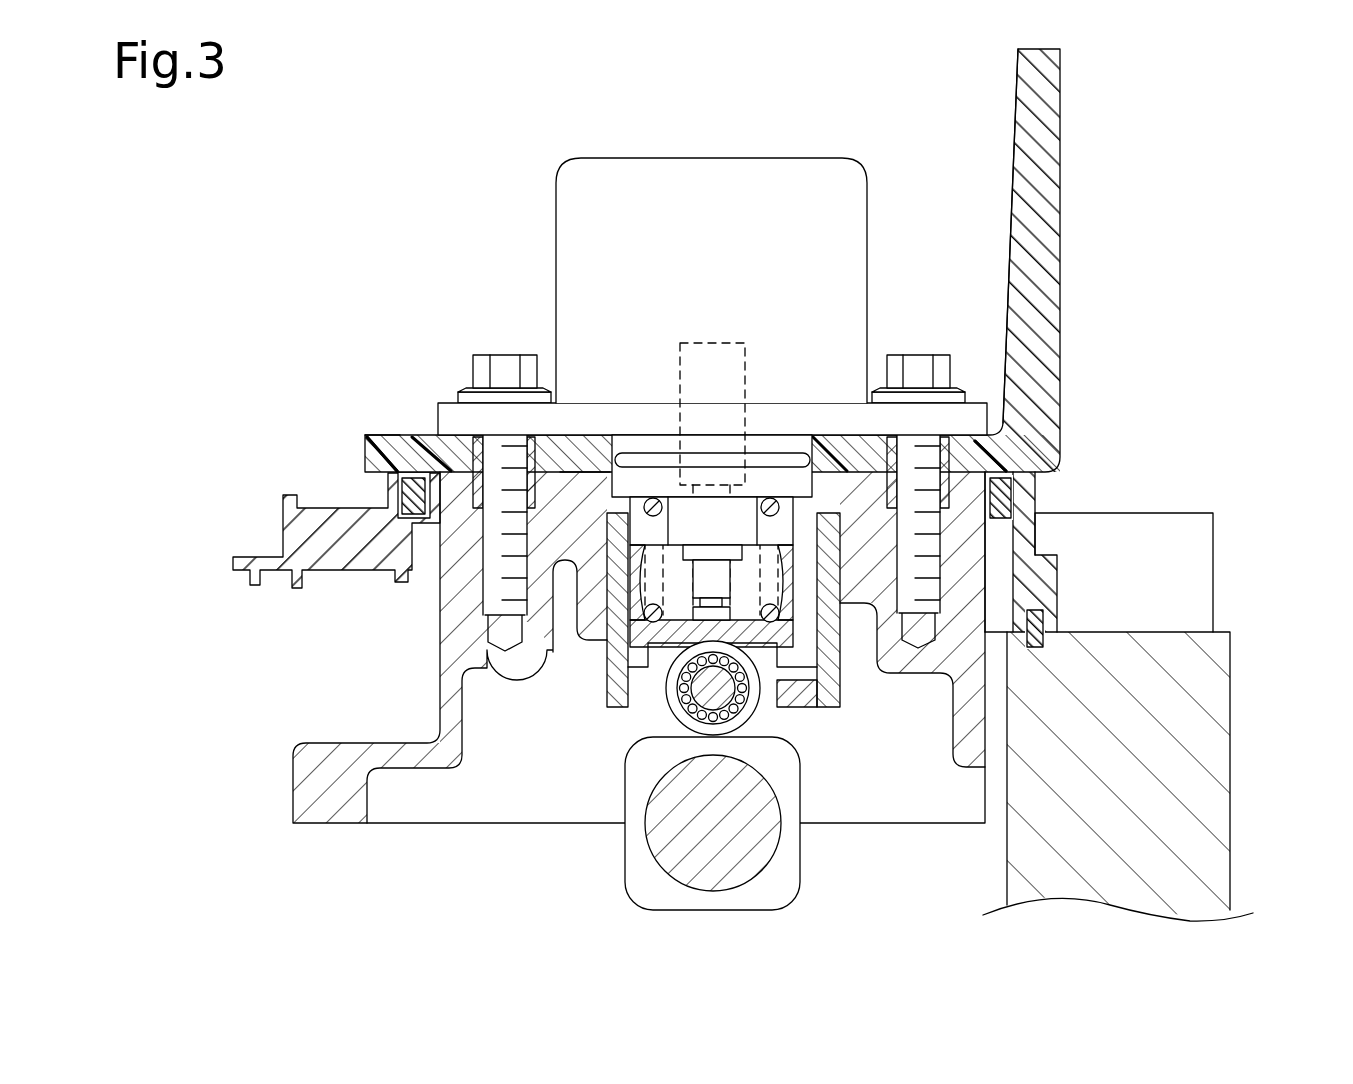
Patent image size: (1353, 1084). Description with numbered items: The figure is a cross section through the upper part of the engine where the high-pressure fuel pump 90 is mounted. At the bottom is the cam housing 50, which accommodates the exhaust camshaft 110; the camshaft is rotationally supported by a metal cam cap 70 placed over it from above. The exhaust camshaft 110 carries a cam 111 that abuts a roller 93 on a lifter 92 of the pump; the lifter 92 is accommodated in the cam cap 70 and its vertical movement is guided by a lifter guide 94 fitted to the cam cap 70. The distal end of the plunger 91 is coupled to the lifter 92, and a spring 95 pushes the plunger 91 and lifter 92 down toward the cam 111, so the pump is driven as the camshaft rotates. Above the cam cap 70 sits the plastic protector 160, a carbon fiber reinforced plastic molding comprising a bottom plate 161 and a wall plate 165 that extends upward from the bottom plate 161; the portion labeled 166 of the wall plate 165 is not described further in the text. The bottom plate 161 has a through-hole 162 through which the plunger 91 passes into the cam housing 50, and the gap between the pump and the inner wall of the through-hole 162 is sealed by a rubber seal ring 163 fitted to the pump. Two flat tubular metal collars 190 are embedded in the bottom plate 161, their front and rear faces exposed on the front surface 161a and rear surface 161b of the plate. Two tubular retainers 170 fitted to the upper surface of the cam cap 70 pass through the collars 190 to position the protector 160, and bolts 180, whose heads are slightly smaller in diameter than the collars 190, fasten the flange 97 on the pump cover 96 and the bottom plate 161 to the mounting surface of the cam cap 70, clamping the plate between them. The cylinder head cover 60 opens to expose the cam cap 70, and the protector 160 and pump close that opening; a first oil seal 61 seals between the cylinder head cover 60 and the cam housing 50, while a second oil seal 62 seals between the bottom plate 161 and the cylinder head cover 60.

The cam housing 50 is at (1232, 820).
The cylinder head cover 60 is at (290, 538).
The first oil seal 61 is at (1045, 620).
The second oil seal 62 is at (402, 492).
The cam cap 70 is at (440, 664).
The high-pressure fuel pump 90 is at (712, 412).
The plunger 91 is at (745, 352).
The lifter 92 is at (835, 665).
The roller 93 is at (760, 705).
The lifter guide 94 is at (608, 690).
The spring 95 is at (630, 645).
The cover 96 is at (556, 263).
The flange 97 is at (620, 410).
The exhaust camshaft 110 is at (770, 852).
The cam 111 is at (655, 905).
The protector 160 is at (753, 340).
The bottom plate 161 is at (405, 440).
The front surface 161a is at (372, 433).
The rear surface 161b is at (583, 482).
The through-hole 162 is at (800, 438).
The rubber seal ring 163 is at (657, 458).
The wall plate 165 is at (1062, 290).
The inner surface of upright plate 166 is at (1022, 252).
The retainer 170 is at (478, 512).
The bolt 180 is at (502, 357).
The collar 190 is at (450, 457).